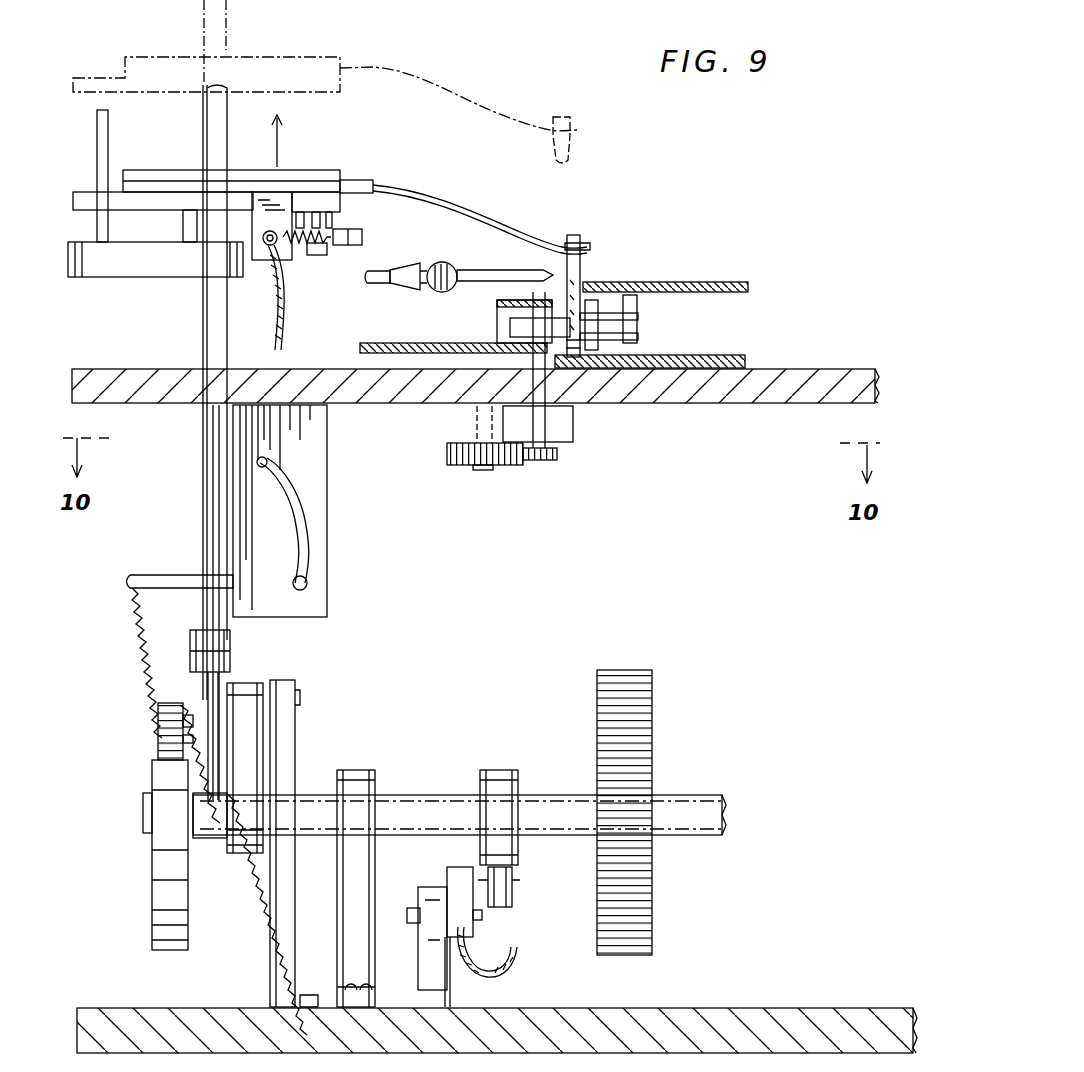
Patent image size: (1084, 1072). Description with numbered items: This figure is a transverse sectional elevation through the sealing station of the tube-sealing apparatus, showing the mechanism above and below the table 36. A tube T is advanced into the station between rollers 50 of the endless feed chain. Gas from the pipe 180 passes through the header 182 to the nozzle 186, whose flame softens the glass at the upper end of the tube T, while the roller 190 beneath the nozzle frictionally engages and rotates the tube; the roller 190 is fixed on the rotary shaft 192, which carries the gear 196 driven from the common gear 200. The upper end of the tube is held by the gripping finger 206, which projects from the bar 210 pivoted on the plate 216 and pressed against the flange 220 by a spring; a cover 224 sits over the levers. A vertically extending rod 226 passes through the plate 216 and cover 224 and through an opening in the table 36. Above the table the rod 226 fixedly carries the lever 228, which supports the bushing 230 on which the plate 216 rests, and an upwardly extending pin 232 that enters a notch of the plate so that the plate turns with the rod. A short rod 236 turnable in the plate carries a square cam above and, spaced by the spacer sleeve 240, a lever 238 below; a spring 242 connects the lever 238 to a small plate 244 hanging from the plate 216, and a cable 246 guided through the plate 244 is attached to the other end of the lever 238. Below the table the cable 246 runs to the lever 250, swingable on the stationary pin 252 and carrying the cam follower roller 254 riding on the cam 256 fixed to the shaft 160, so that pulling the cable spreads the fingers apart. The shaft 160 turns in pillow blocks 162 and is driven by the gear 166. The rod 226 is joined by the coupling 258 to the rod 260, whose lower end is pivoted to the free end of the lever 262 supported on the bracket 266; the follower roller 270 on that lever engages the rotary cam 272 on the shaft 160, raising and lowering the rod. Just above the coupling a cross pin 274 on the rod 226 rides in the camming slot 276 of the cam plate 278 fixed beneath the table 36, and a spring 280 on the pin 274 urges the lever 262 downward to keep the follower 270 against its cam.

The table 36 is at (168, 398).
The roller 50 is at (612, 285).
The rotary shaft 160 is at (672, 800).
The pillow block 162 is at (362, 772).
The gear 166 is at (650, 672).
The pipe 180 is at (385, 290).
The header 182 is at (443, 262).
The nozzle 186 is at (517, 270).
The roller 190 is at (510, 326).
The rotary shaft 192 is at (545, 390).
The gear 196 is at (543, 462).
The common gear 200 is at (452, 465).
The gripping finger 206 is at (462, 96).
The bar 210 is at (362, 180).
The plate 216 is at (160, 207).
The flange 220 is at (283, 183).
The cover 224 is at (240, 165).
The rod 226 is at (204, 40).
The lever 228 is at (132, 277).
The bushing 230 is at (190, 228).
The pin 232 is at (108, 128).
The rod 236 is at (323, 255).
The lever 238 is at (365, 240).
The spacer sleeve 240 is at (335, 220).
The spring 242 is at (330, 255).
The small plate 244 is at (288, 205).
The cable 246 is at (282, 318).
The lever 250 is at (447, 870).
The stationary pin 252 is at (482, 915).
The cam follower roller 254 is at (512, 878).
The cam 256 is at (505, 775).
The coupling 258 is at (230, 640).
The rod 260 is at (220, 680).
The lever 262 is at (228, 853).
The bracket 266 is at (296, 723).
The follower roller 270 is at (158, 740).
The rotary cam 272 is at (152, 905).
The cross pin 274 is at (173, 575).
The camming slot 276 is at (310, 540).
The cam plate 278 is at (328, 465).
The spring 280 is at (145, 640).
The tube T is at (577, 240).